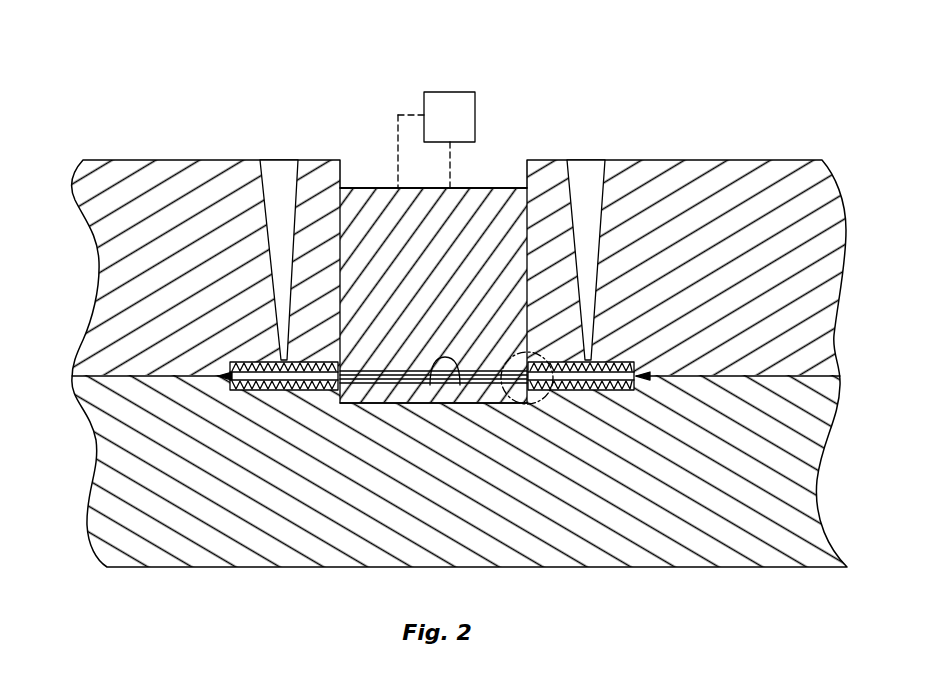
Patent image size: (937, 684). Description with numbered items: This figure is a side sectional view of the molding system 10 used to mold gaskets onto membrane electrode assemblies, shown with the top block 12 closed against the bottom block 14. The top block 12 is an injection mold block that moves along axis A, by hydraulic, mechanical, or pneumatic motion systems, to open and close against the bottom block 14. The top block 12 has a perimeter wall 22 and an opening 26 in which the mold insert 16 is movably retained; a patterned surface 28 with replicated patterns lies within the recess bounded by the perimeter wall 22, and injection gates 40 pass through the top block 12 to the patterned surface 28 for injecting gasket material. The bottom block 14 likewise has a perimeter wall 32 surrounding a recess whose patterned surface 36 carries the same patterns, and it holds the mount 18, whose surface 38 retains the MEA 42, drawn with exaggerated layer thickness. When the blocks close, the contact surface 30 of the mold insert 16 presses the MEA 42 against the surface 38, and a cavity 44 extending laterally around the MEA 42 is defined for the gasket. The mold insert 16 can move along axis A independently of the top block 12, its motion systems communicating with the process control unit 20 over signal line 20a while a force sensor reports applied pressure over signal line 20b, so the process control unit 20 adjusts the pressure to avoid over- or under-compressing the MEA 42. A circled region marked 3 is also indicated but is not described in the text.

The molding system 10 is at (89, 113).
The axis A is at (153, 30).
The top block 12 is at (768, 154).
The bottom block 14 is at (756, 584).
The mold insert 16 is at (424, 295).
The mount 18 is at (379, 412).
The process control unit 20 is at (453, 92).
The signal line 20a is at (398, 123).
The signal line 20b is at (452, 158).
The perimeter wall 22 is at (115, 292).
The opening 26 is at (503, 174).
The patterned surface 28 is at (235, 363).
The contact surface 30 is at (428, 385).
The perimeter wall 32 is at (197, 558).
The patterned surface 36 is at (242, 390).
The surface 38 is at (478, 385).
The injection gates 40 is at (277, 150).
The MEA 42 is at (387, 358).
The cavity 44 is at (242, 389).
The section line 3 is at (552, 397).